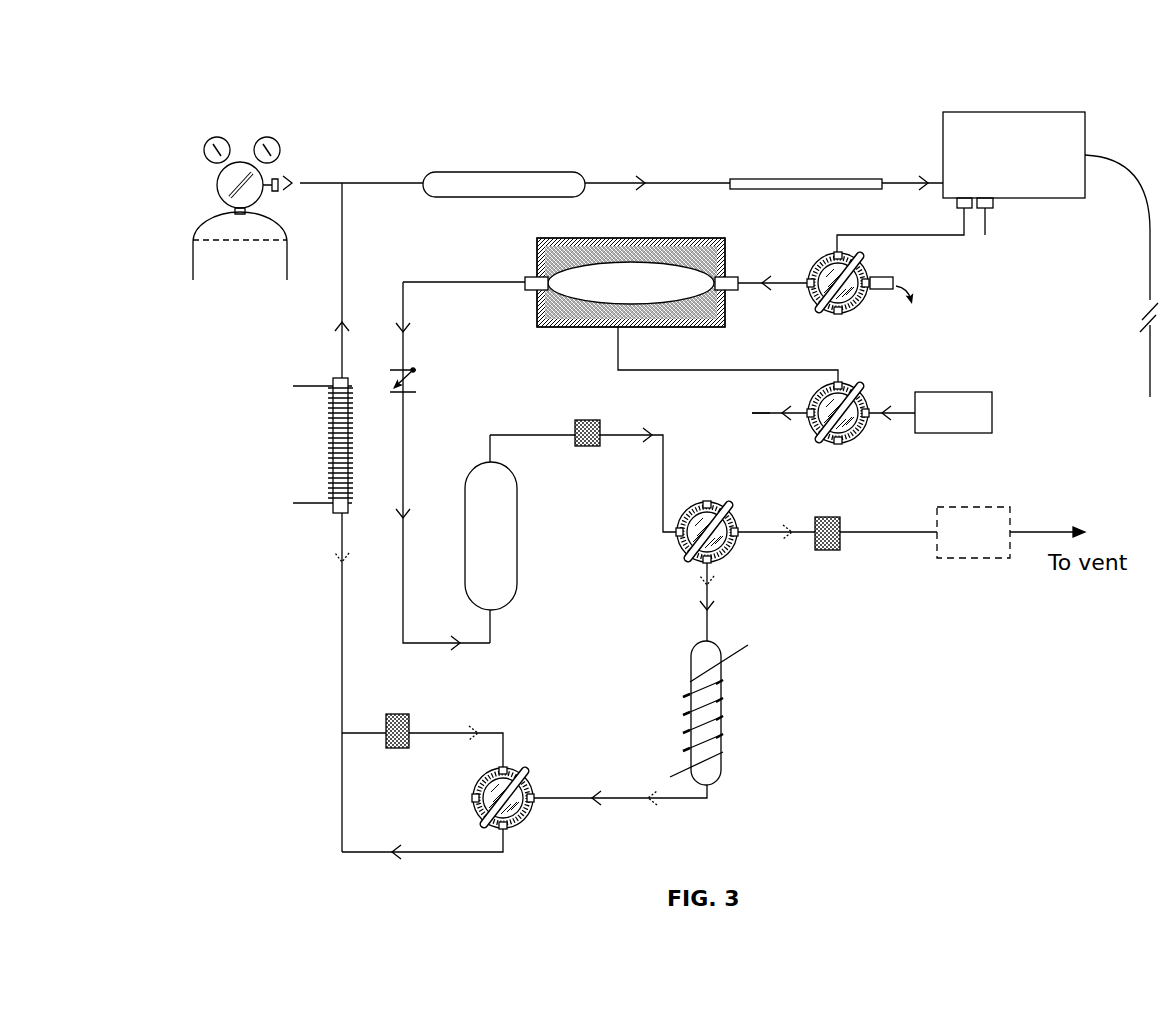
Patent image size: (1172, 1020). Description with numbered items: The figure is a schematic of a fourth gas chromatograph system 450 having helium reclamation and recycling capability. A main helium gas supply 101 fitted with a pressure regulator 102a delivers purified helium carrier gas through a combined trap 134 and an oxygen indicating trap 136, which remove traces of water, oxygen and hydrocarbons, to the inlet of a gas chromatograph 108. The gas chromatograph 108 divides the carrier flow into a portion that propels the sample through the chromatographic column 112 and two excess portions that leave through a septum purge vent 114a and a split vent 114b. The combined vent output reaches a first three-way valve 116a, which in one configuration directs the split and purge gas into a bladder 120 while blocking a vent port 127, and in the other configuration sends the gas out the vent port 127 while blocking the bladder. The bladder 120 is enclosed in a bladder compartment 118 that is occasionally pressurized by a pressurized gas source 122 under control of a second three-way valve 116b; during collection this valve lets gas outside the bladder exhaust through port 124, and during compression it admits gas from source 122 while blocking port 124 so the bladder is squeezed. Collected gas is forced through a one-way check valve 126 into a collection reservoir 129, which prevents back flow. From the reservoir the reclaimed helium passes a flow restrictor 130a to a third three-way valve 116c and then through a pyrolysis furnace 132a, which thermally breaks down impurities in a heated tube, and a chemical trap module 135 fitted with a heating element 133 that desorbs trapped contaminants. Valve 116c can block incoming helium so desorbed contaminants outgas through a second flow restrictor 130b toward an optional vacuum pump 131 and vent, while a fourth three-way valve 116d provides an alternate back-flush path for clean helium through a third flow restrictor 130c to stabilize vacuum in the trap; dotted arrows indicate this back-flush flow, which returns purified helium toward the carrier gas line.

The gas chromatograph system 450 is at (502, 62).
The main helium gas supply 101 is at (200, 228).
The pressure regulator 102a is at (281, 128).
The gas chromatograph 108 is at (942, 122).
The chromatographic column 112 is at (1150, 365).
The septum purge vent 114a is at (953, 204).
The split vent 114b is at (995, 206).
The first 3-way valve 116a is at (862, 302).
The second 3-way valve 116b is at (862, 435).
The third 3-way valve 116c is at (680, 547).
The fourth 3-way valve 116d is at (533, 814).
The bladder compartment 118 is at (601, 278).
The bladder 120 is at (651, 296).
The pressurized gas source 122 is at (973, 426).
The port 124 is at (767, 415).
The one-way check valve 126 is at (470, 320).
The vent port 127 is at (880, 275).
The collection reservoir 129 is at (517, 510).
The flow restrictor 130a is at (600, 426).
The second flow restrictor 130b is at (842, 550).
The third flow restrictor 130c is at (412, 728).
The vacuum pump 131 is at (990, 560).
The pyrolysis furnace 132a is at (294, 424).
The heating element 133 is at (748, 645).
The combined trap 134 is at (467, 172).
The chemical trap module 135 is at (744, 695).
The oxygen indicating trap 136 is at (762, 181).